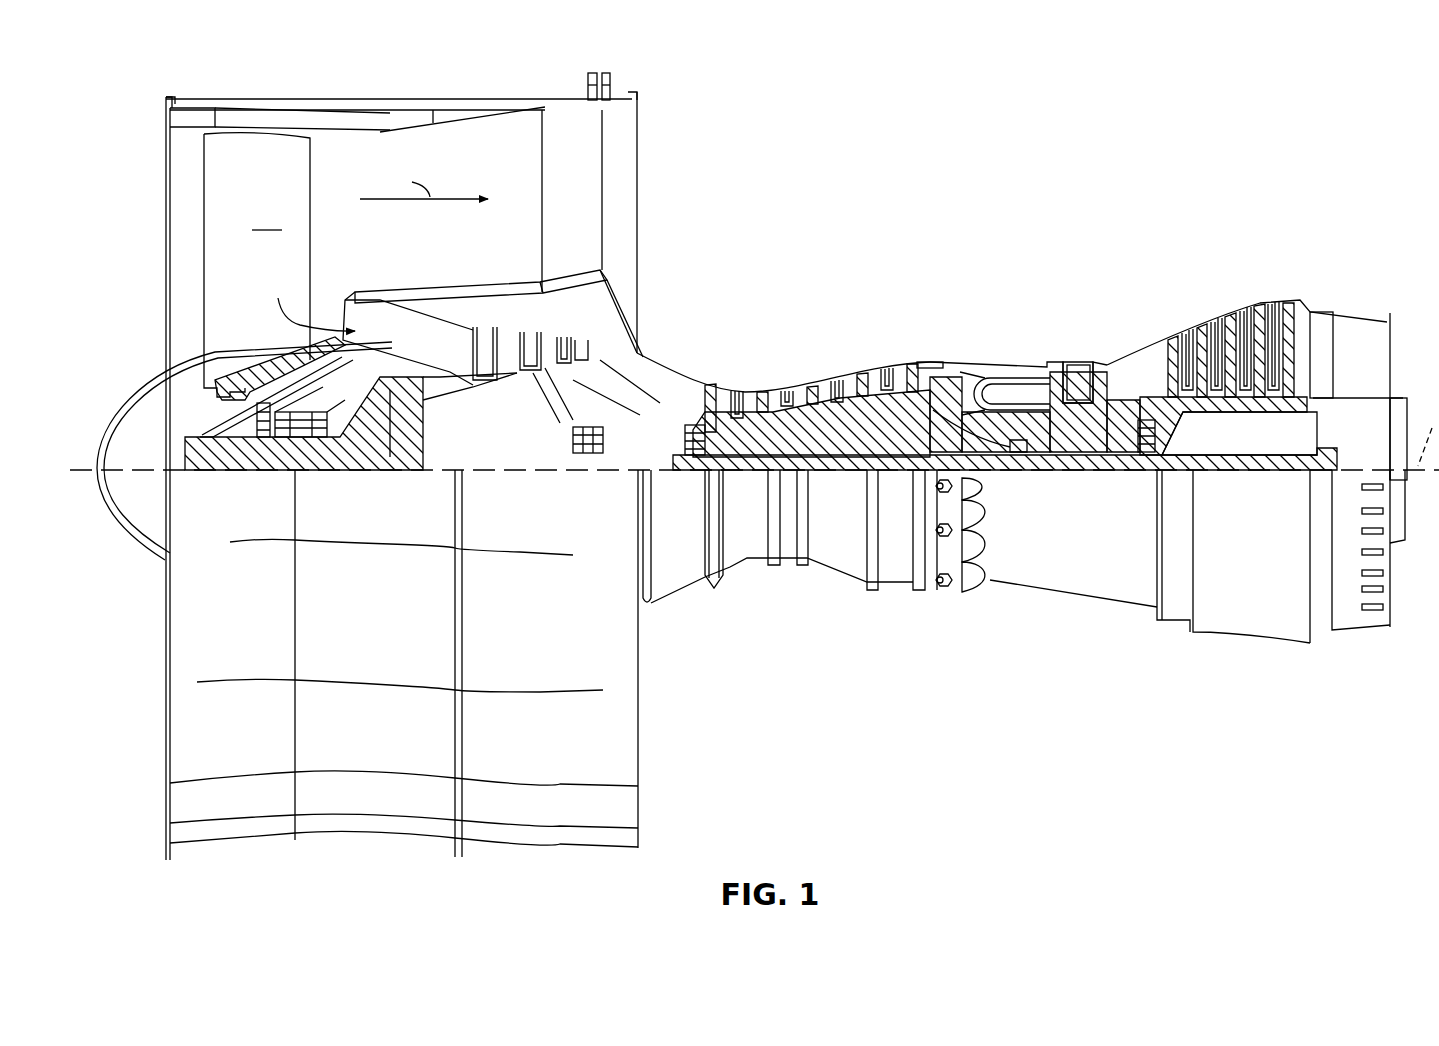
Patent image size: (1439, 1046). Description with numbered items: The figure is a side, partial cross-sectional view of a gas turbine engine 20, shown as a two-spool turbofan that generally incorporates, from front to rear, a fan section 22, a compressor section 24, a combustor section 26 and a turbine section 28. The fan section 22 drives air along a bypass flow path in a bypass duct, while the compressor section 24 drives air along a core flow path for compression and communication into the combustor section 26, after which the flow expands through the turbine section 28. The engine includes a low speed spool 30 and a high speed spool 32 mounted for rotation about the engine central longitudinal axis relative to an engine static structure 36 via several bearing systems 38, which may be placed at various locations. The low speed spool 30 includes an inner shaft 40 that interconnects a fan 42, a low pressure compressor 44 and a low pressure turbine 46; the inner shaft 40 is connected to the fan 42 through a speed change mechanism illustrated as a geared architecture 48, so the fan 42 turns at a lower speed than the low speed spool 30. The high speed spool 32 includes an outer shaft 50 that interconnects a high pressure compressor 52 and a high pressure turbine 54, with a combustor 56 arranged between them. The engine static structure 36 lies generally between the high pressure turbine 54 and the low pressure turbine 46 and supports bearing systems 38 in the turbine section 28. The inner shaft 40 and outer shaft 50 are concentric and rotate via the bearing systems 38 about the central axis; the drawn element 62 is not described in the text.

The gas turbine engine 20 is at (1210, 140).
The fan section 22 is at (434, 83).
The compressor section 24 is at (828, 325).
The combustor section 26 is at (985, 325).
The turbine section 28 is at (1182, 268).
The low speed spool 30 is at (862, 478).
The high speed spool 32 is at (913, 402).
The engine static structure 36 is at (900, 592).
The bearing systems 38 is at (260, 460).
The inner shaft 40 is at (652, 476).
The fan 42 is at (346, 265).
The low pressure compressor 44 is at (590, 340).
The low pressure turbine 46 is at (1247, 328).
The geared architecture 48 is at (398, 440).
The outer shaft 50 is at (1028, 458).
The high pressure compressor 52 is at (818, 420).
The high pressure turbine 54 is at (1082, 362).
The combustor 56 is at (1002, 386).
The fan case 62 is at (182, 140).